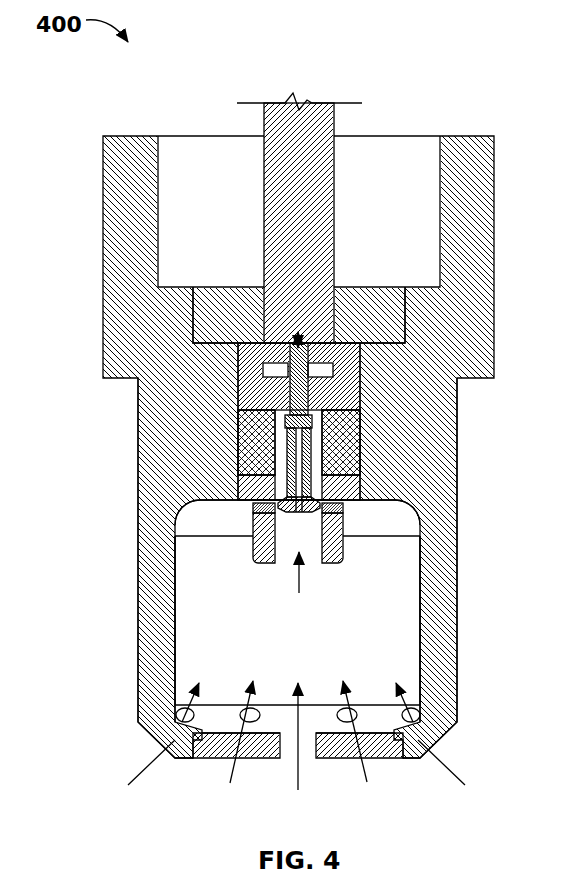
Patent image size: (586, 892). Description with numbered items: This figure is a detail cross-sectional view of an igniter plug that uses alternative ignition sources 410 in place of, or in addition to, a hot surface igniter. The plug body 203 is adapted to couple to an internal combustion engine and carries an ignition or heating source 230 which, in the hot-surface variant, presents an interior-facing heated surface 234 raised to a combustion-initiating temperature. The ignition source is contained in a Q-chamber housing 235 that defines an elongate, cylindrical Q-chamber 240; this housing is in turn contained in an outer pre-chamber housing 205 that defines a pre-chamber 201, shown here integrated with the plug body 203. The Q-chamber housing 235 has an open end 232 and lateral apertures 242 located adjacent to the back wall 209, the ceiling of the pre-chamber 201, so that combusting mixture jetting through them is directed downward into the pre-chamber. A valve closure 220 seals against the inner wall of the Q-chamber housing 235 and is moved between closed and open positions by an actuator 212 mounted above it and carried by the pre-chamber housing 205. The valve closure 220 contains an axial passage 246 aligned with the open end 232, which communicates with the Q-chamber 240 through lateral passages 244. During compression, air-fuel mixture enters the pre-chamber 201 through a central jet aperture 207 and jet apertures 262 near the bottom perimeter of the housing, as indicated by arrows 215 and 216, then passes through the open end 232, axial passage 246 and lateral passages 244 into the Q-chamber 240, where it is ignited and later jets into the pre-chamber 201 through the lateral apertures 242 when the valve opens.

The plug body 203 is at (480, 178).
The pre-chamber housing 205 is at (440, 667).
The actuator 212 is at (325, 180).
The valve closure 220 is at (268, 349).
The Q-chamber housing 235 is at (355, 364).
The ignition or heating source 230 is at (350, 418).
The heated surface 234 is at (323, 443).
The alternative ignition sources 410 is at (237, 421).
The lateral passages 244 is at (237, 500).
The Q-chamber 240 is at (313, 462).
The lateral apertures 242 is at (343, 507).
The back wall 209 is at (360, 497).
The open end 232 is at (308, 553).
The axial passage 246 is at (296, 520).
The pre-chamber 201 is at (188, 672).
The arrows 216 is at (246, 708).
The jet apertures 262 is at (342, 708).
The arrows 215 is at (297, 778).
The central jet aperture 207 is at (381, 750).